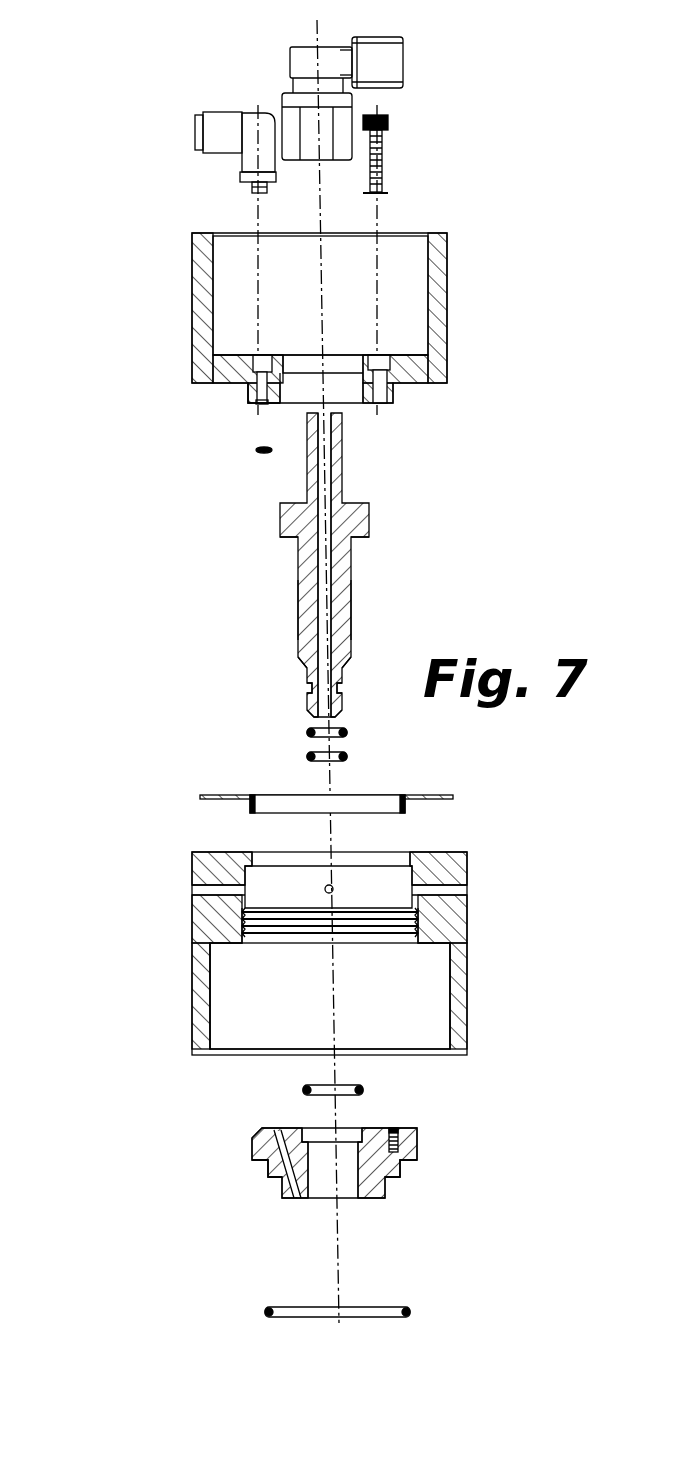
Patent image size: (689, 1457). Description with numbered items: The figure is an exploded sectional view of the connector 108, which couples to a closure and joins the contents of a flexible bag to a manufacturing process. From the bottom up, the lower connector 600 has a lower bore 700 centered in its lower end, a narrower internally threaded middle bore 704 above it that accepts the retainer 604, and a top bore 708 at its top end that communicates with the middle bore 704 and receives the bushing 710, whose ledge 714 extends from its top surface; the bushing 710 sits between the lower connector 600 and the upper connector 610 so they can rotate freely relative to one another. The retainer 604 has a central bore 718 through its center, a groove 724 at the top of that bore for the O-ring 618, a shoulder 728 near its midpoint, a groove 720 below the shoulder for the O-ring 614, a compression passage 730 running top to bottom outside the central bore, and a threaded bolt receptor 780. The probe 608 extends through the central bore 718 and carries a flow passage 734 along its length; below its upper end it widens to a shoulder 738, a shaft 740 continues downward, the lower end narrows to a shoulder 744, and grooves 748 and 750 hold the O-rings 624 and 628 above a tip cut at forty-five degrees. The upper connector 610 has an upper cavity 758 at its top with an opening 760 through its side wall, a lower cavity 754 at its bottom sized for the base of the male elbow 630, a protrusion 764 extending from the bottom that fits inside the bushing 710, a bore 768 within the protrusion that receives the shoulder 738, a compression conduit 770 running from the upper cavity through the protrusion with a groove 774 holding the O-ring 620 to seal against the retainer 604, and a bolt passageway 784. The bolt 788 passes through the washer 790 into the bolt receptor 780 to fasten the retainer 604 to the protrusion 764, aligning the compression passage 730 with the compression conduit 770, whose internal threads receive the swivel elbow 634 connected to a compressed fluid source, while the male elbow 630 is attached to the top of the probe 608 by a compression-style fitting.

The connector 108 is at (122, 560).
The lower connector 600 is at (351, 938).
The retainer 604 is at (360, 1160).
The probe 608 is at (367, 572).
The upper connector 610 is at (342, 312).
The O-ring 614 is at (405, 1307).
The O-ring 618 is at (361, 1085).
The O-ring 620 is at (265, 451).
The O-ring 624 is at (345, 732).
The O-ring 628 is at (347, 756).
The male elbow 630 is at (323, 47).
The swivel elbow 634 is at (222, 112).
The lower bore 700 is at (238, 998).
The middle bore 704 is at (270, 882).
The top bore 708 is at (262, 860).
The bushing 710 is at (315, 804).
The ledge 714 is at (430, 799).
The central bore 718 is at (323, 1185).
The groove 720 is at (270, 1168).
The groove 724 is at (360, 1128).
The shoulder 728 is at (407, 1165).
The compression passage 730 is at (272, 1138).
The flow passage 734 is at (326, 576).
The shoulder 738 is at (365, 540).
The shaft 740 is at (338, 598).
The shoulder 744 is at (352, 657).
The groove 748 is at (339, 688).
The groove 750 is at (340, 700).
The lower cavity 754 is at (340, 363).
The upper cavity 758 is at (397, 243).
The opening 760 is at (437, 268).
The protrusion 764 is at (248, 393).
The bore 768 is at (350, 390).
The compression conduit 770 is at (257, 370).
The groove 774 is at (262, 405).
The bolt receptor 780 is at (398, 1147).
The bolt passageway 784 is at (377, 388).
The bolt 788 is at (387, 147).
The washer 790 is at (388, 192).